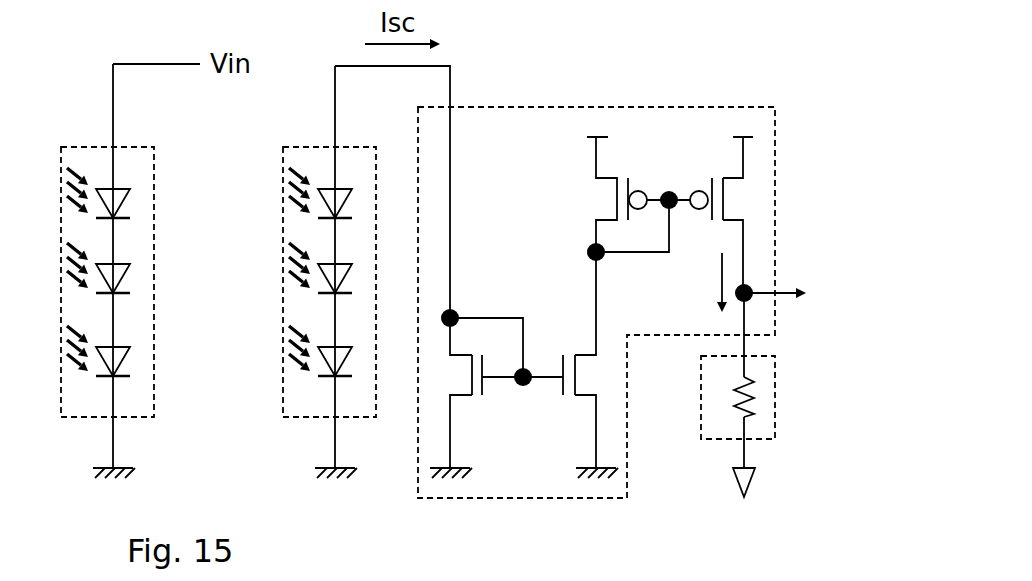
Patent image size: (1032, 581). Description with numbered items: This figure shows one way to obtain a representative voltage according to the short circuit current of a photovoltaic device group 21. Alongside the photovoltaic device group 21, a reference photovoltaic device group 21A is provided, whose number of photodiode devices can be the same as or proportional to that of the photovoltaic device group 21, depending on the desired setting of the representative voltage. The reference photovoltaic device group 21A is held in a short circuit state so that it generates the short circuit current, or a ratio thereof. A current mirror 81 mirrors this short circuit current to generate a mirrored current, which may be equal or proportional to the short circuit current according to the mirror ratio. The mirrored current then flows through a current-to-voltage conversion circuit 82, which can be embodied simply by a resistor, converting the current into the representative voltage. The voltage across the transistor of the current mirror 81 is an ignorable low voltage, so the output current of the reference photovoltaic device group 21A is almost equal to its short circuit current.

The photovoltaic device group 21 is at (108, 147).
The reference photovoltaic device group 21A is at (330, 147).
The current mirror 81 is at (556, 107).
The current-to-voltage conversion circuit 82 is at (775, 395).